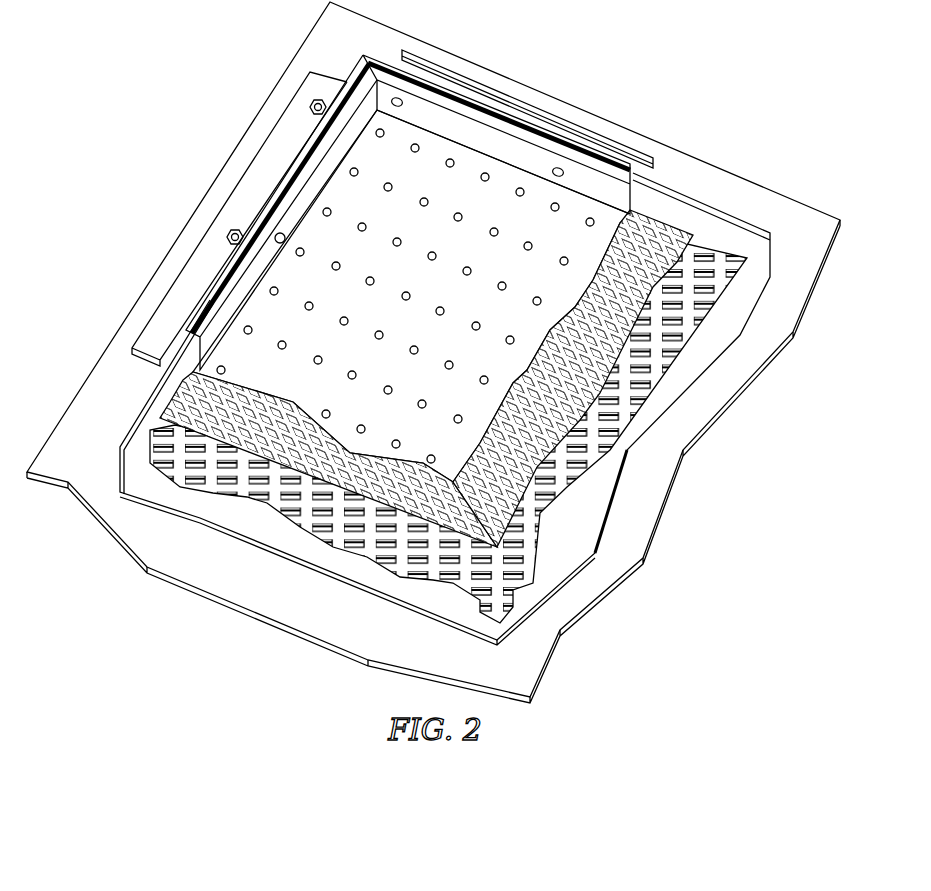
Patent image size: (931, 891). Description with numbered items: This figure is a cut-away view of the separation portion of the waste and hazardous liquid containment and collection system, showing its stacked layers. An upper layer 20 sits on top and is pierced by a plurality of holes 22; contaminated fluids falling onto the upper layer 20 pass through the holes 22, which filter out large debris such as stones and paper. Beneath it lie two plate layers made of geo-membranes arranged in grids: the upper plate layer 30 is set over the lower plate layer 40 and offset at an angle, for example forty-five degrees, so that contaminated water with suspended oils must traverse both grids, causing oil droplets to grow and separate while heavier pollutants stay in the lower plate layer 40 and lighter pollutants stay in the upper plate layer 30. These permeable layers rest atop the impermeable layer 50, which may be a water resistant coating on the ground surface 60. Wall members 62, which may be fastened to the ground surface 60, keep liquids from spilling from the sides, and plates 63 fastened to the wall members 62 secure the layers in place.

The upper layer 20 is at (424, 295).
The holes 22 is at (363, 227).
The upper plate layer 30 is at (628, 382).
The lower plate layer 40 is at (610, 443).
The impermeable layer 50 is at (600, 517).
The ground surface 60 is at (169, 546).
The wall members 62 is at (267, 167).
The plates 63 is at (347, 137).